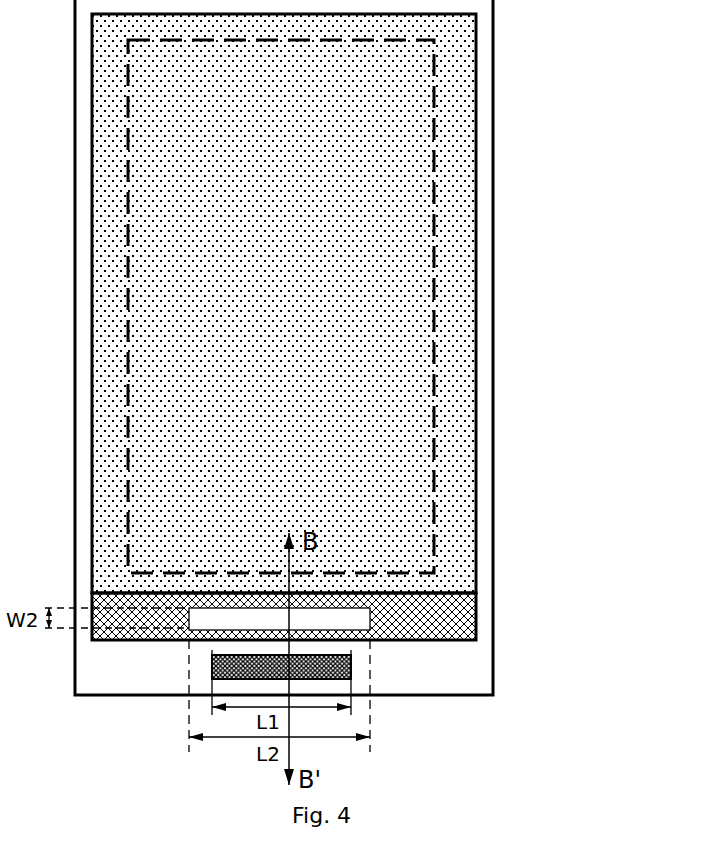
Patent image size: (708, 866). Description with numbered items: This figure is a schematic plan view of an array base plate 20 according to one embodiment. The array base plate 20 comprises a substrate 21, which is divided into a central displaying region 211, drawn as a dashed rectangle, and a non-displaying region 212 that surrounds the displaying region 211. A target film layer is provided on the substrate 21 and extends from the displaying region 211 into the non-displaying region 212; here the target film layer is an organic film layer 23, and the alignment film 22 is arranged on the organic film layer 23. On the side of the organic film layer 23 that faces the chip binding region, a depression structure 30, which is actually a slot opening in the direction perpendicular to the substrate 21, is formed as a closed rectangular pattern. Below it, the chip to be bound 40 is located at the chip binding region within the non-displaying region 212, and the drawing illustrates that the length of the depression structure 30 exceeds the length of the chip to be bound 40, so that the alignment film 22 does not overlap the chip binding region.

The array base plate 20 is at (582, 588).
The substrate 21 is at (490, 225).
The displaying region 211 is at (433, 335).
The non-displaying region 212 is at (462, 657).
The alignment film 22 is at (467, 383).
The organic film layer 23 is at (447, 613).
The depression structure 30 is at (317, 612).
The chip to be bound 40 is at (345, 678).